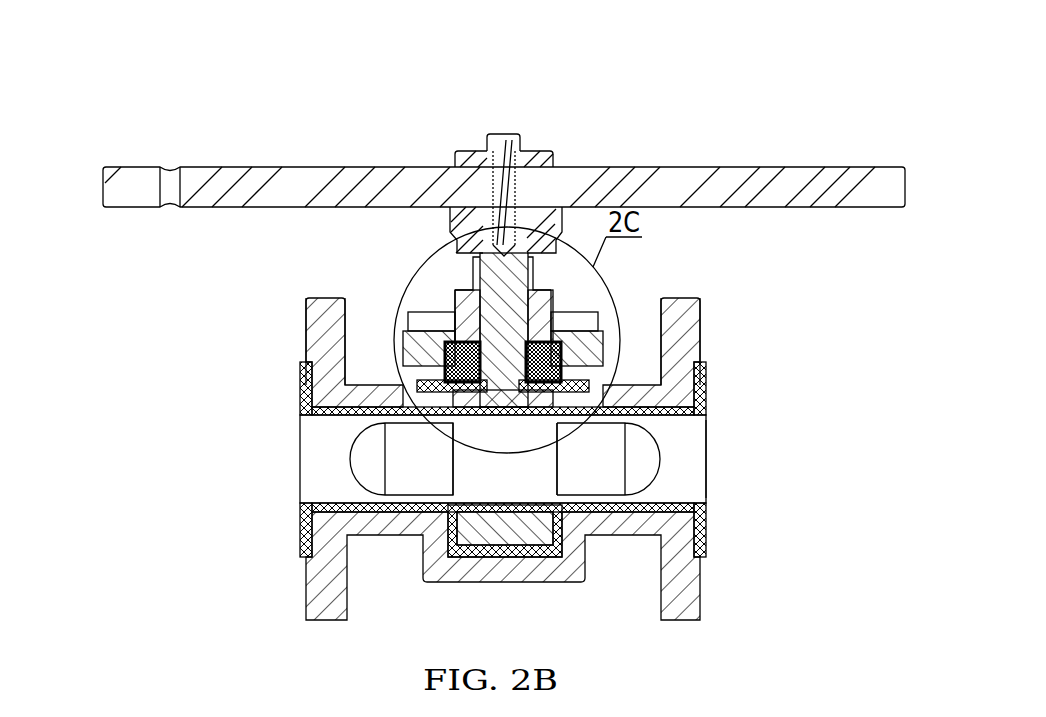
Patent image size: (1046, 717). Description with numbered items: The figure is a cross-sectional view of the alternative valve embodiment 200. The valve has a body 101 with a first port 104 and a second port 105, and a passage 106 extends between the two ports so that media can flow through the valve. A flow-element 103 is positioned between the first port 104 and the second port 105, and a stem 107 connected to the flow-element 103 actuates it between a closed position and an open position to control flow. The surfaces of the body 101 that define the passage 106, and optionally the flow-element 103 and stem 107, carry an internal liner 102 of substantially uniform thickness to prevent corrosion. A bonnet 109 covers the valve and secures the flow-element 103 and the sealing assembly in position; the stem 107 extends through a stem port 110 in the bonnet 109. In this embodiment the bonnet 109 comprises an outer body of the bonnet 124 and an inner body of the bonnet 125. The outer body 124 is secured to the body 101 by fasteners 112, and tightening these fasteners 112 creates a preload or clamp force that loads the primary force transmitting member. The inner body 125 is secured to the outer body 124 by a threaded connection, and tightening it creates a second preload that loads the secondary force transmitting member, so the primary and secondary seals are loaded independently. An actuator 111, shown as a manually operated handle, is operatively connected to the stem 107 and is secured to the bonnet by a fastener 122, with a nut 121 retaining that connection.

The valve 200 is at (356, 136).
The body 101 is at (323, 329).
The internal liner 102 is at (308, 398).
The flow-element 103 is at (527, 472).
The first port 104 is at (298, 434).
The second port 105 is at (712, 450).
The passage 106 is at (408, 473).
The stem 107 is at (500, 285).
The bonnet 109 is at (583, 325).
The stem port 110 is at (350, 402).
The actuator 111 is at (822, 192).
The fasteners 112 is at (425, 322).
The nut 121 is at (548, 150).
The fastener 122 is at (508, 145).
The outer body of the bonnet 124 is at (372, 400).
The inner body of the bonnet 125 is at (460, 345).